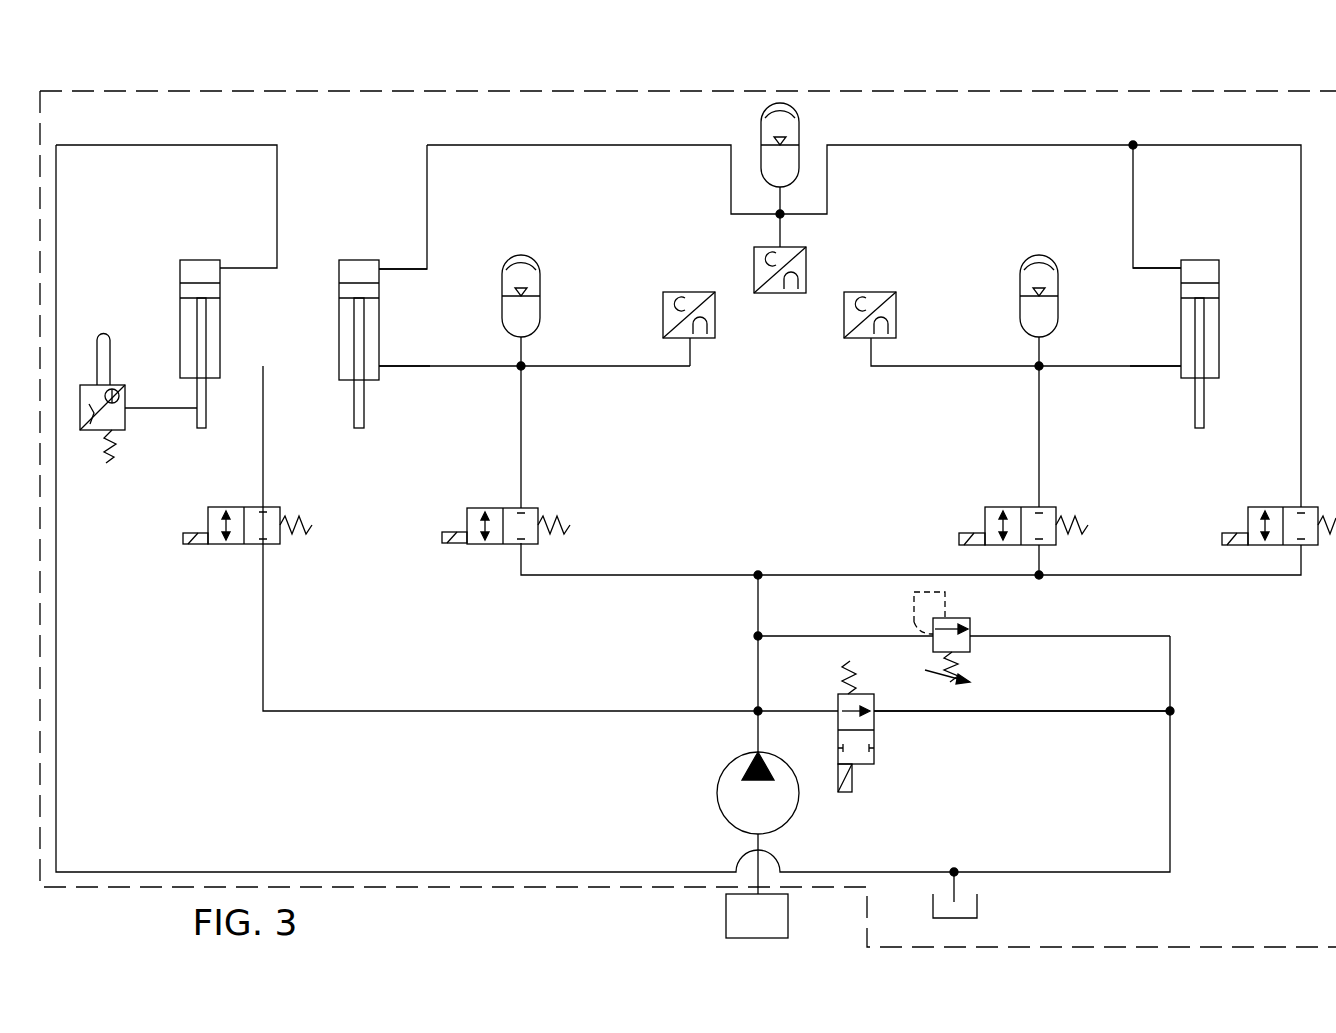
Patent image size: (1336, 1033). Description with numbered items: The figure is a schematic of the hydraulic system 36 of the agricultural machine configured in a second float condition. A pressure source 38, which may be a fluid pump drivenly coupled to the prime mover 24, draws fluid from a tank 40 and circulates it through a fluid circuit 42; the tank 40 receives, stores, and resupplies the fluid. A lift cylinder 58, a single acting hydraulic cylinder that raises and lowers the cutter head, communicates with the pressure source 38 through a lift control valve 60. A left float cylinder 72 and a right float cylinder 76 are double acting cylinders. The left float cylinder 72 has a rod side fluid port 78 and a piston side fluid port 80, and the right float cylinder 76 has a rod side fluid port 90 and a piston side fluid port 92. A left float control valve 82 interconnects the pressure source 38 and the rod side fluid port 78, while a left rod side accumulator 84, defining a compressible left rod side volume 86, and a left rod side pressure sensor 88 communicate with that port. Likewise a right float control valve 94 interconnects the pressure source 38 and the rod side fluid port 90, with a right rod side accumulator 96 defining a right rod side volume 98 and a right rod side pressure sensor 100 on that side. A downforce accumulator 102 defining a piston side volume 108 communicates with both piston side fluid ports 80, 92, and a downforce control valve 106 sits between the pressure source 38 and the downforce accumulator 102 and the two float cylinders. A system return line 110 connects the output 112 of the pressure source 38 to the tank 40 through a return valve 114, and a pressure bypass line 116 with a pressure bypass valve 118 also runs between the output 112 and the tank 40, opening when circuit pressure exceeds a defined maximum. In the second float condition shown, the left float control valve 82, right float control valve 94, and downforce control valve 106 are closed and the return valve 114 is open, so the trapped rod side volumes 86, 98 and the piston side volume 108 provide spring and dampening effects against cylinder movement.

The prime mover 24 is at (742, 930).
The hydraulic system 36 is at (1188, 82).
The pressure source 38 is at (718, 785).
The tank 40 is at (980, 908).
The fluid circuit 42 is at (515, 91).
The lift cylinder 58 is at (180, 268).
The lift control valve 60 is at (212, 545).
The left float cylinder 72 is at (380, 318).
The right float cylinder 76 is at (1215, 260).
The rod side fluid port 78 is at (382, 363).
The piston side fluid port 80 is at (382, 272).
The left float control valve 82 is at (470, 545).
The left rod side accumulator 84 is at (537, 268).
The left rod side volume 86 is at (515, 270).
The left rod side pressure sensor 88 is at (673, 292).
The rod side fluid port 90 is at (1181, 380).
The piston side fluid port 92 is at (1181, 280).
The right float control valve 94 is at (993, 507).
The right rod side accumulator 96 is at (1032, 256).
The right rod side volume 98 is at (1040, 270).
The right rod side pressure sensor 100 is at (850, 292).
The downforce accumulator 102 is at (800, 155).
The downforce control valve 106 is at (1262, 507).
The piston side volume 108 is at (775, 122).
The system return line 110 is at (1028, 711).
The output 112 is at (758, 752).
The return valve 114 is at (874, 760).
The pressure bypass line 116 is at (1090, 636).
The pressure bypass valve 118 is at (968, 621).